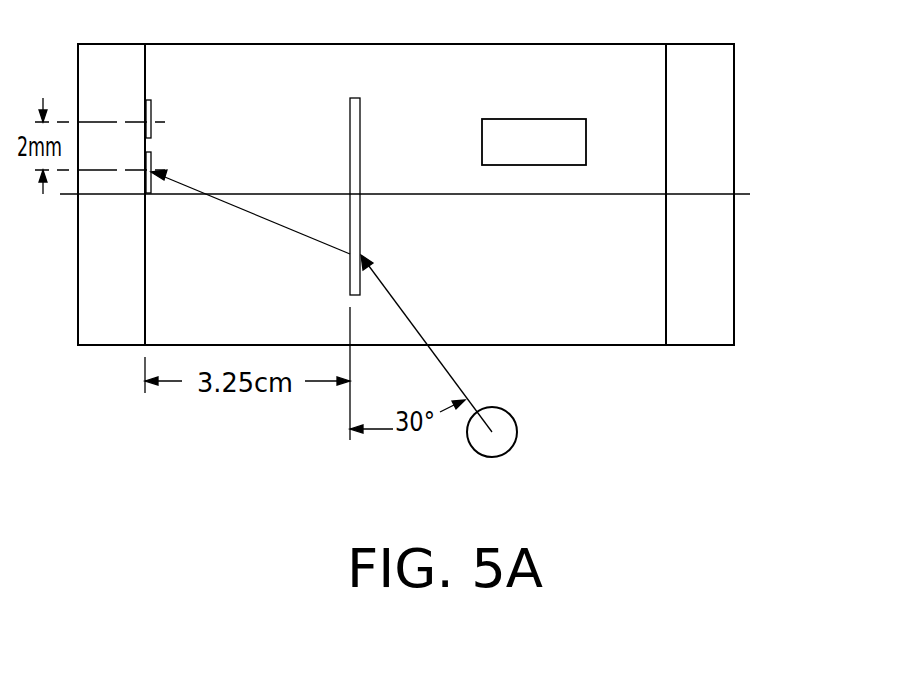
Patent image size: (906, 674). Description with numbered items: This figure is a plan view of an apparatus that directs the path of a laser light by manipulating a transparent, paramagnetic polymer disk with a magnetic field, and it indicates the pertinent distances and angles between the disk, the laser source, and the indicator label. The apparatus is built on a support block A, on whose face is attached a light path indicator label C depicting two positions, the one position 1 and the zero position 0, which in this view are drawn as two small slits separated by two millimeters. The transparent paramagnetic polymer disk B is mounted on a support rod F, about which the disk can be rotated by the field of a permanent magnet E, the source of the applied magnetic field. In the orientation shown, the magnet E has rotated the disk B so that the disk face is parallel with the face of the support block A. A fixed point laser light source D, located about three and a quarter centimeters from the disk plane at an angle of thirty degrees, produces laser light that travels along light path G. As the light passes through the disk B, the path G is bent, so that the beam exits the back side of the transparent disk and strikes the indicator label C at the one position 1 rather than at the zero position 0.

The support block A is at (463, 45).
The transparent paramagnetic polymer disk B is at (355, 95).
The indicator label C is at (185, 134).
The zero position 0 is at (148, 100).
The one position 1 is at (149, 193).
The laser light source D is at (517, 431).
The permanent magnet E is at (562, 119).
The support rod F is at (712, 194).
The light path G is at (456, 384).